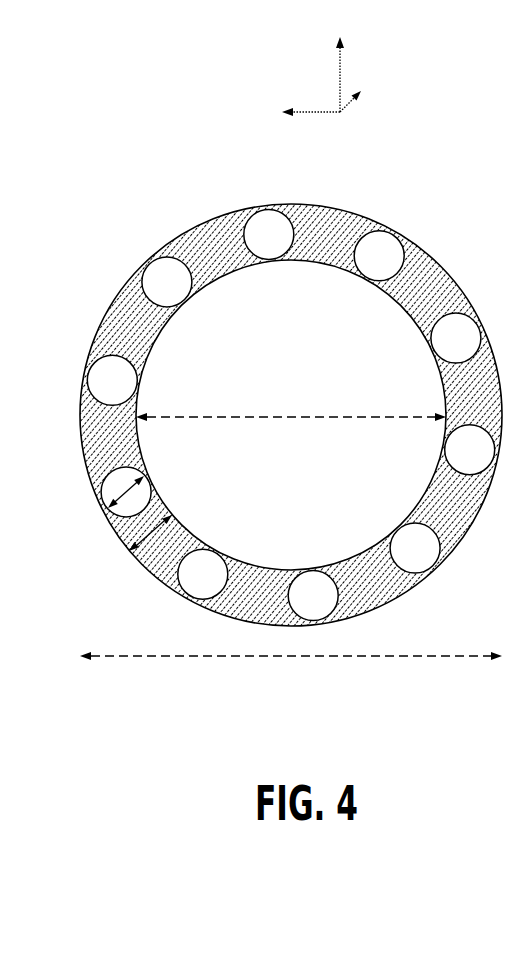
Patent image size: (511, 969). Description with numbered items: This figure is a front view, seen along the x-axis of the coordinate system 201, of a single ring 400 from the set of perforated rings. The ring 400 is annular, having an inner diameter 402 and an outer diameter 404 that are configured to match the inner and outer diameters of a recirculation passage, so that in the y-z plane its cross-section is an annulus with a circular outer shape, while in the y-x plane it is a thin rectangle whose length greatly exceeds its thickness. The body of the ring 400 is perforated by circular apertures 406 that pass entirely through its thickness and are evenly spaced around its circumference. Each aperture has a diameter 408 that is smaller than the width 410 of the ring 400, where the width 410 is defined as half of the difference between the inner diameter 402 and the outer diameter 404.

The coordinate system 201 is at (309, 66).
The ring 400 is at (183, 172).
The inner diameter 402 is at (238, 416).
The outer diameter 404 is at (375, 658).
The apertures 406 is at (163, 277).
The diameter of the apertures 408 is at (115, 502).
The width of the ring 410 is at (157, 535).